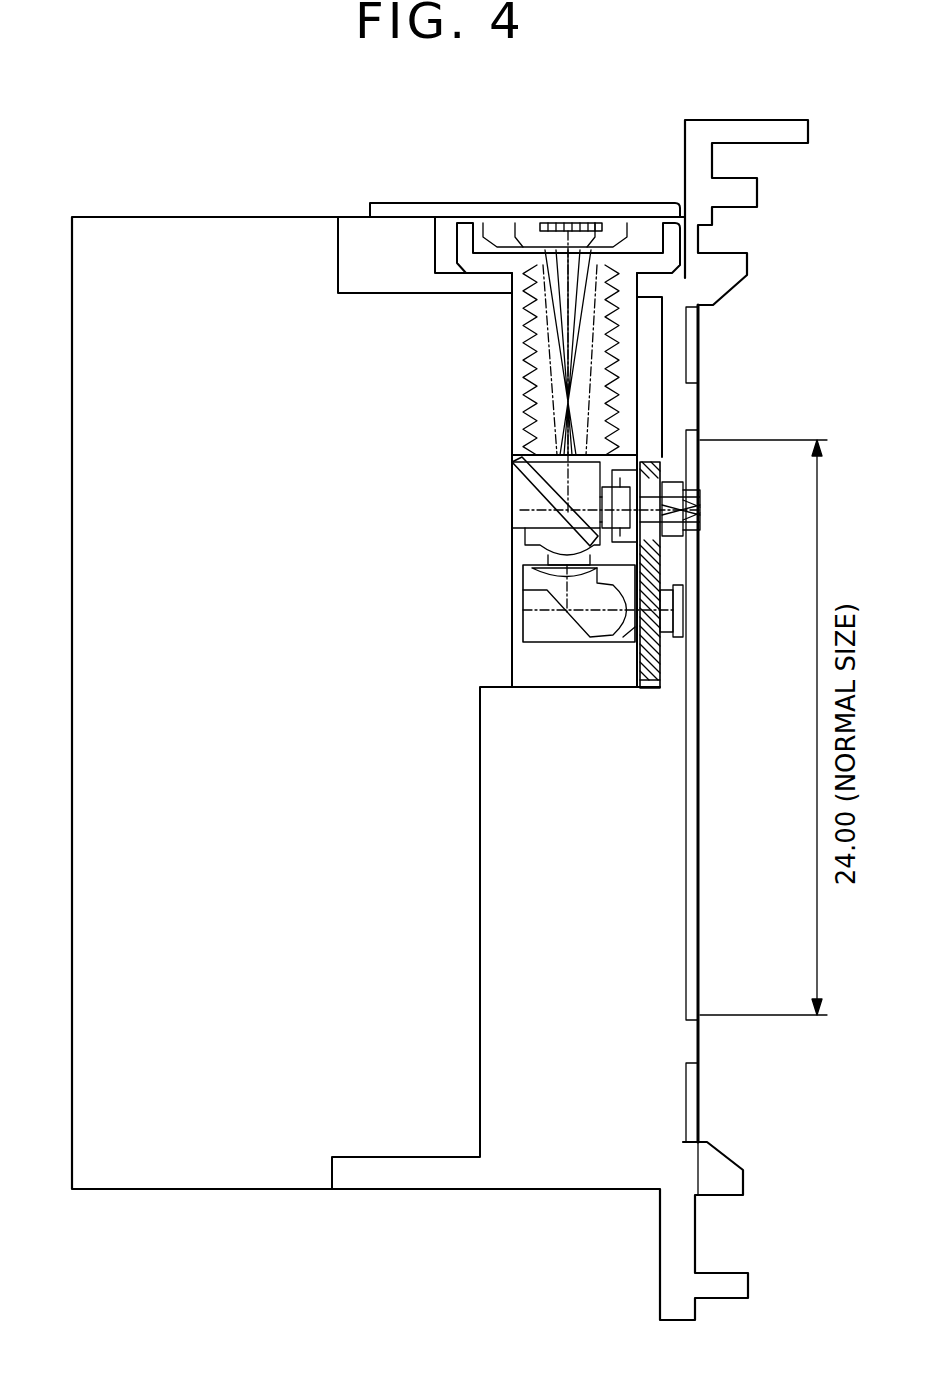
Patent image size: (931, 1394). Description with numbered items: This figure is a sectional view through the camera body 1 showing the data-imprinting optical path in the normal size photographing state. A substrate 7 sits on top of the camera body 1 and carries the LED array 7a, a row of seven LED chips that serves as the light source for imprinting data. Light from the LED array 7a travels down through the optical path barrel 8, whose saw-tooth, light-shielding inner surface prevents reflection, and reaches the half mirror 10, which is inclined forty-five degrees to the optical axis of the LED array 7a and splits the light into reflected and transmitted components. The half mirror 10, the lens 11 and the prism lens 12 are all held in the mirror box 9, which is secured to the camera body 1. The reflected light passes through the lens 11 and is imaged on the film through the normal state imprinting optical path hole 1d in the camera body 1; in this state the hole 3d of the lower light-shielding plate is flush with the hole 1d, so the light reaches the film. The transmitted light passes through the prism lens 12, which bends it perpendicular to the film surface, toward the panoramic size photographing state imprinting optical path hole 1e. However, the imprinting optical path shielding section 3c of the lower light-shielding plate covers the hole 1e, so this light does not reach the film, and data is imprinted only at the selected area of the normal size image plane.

The camera body 1 is at (200, 228).
The normal state imprinting optical path hole 1d is at (682, 528).
The panoramic size photographing state imprinting optical path hole 1e is at (685, 617).
The imprinting optical path shielding section 3c is at (655, 668).
The hole 3d is at (662, 478).
The substrate 7 is at (390, 212).
The LED array 7a is at (606, 195).
The optical path barrel 8 is at (518, 388).
The mirror box 9 is at (522, 545).
The half mirror 10 is at (540, 512).
The lens 11 is at (624, 468).
The prism lens 12 is at (527, 582).